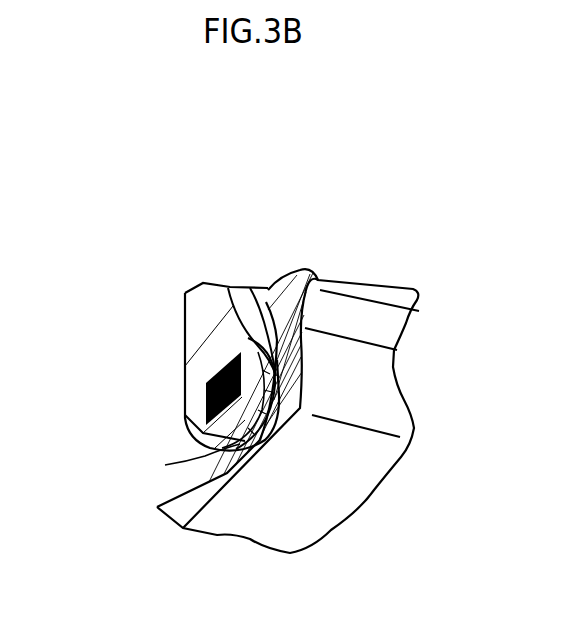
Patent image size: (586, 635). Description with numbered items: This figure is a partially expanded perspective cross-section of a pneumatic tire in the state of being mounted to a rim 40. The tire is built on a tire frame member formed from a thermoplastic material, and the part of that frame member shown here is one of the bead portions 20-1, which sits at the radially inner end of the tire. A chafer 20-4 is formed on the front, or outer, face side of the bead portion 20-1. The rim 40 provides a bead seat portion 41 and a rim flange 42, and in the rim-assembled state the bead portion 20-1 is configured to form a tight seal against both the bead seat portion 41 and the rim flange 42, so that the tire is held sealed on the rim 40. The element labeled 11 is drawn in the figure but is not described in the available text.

The rim 40 is at (466, 420).
The rim flange 42 is at (377, 388).
The bead seat portion 41 is at (167, 465).
The bead portion 20-1 is at (133, 353).
The chafer 20-4 is at (258, 307).
The opening 11 is at (200, 397).